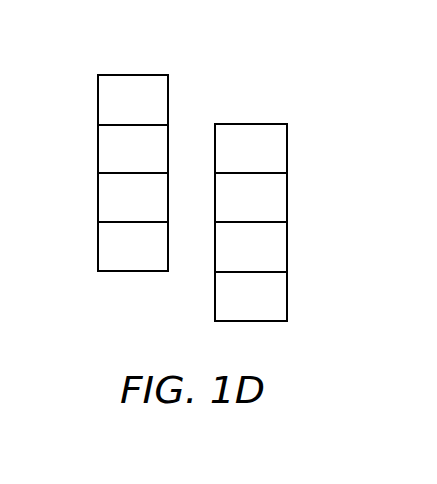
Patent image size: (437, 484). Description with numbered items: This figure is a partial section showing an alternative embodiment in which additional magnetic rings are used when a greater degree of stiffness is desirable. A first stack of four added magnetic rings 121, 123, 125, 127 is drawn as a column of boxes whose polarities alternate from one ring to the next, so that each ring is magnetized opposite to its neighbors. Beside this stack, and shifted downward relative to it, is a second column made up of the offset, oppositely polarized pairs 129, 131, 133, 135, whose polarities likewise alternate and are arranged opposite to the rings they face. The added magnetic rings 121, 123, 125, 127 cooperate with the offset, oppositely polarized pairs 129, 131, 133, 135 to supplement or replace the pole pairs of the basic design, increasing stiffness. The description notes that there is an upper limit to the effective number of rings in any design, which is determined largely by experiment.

The added magnetic ring 121 is at (105, 92).
The added magnetic ring 123 is at (105, 143).
The added magnetic ring 125 is at (105, 198).
The added magnetic ring 127 is at (105, 252).
The offset, oppositely polarized pair 129 is at (278, 150).
The offset, oppositely polarized pair 131 is at (278, 203).
The offset, oppositely polarized pair 133 is at (278, 257).
The offset, oppositely polarized pair 135 is at (278, 312).